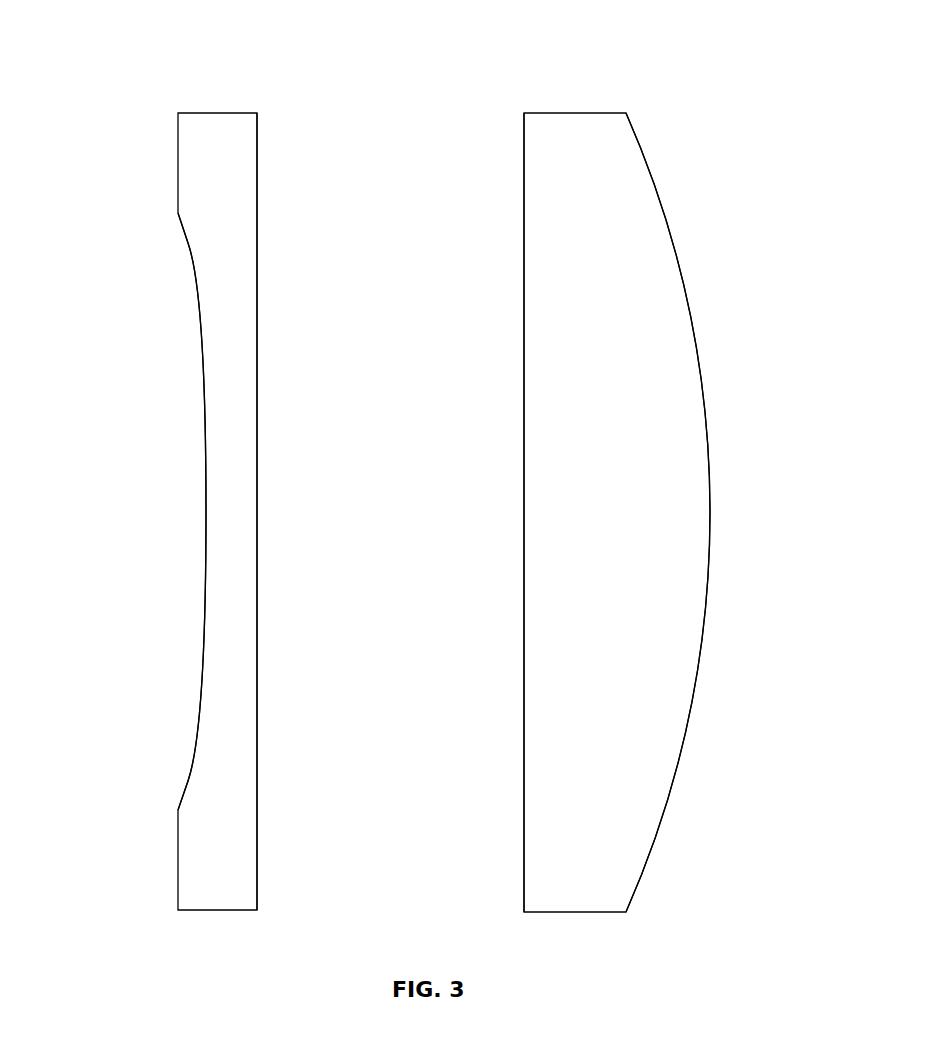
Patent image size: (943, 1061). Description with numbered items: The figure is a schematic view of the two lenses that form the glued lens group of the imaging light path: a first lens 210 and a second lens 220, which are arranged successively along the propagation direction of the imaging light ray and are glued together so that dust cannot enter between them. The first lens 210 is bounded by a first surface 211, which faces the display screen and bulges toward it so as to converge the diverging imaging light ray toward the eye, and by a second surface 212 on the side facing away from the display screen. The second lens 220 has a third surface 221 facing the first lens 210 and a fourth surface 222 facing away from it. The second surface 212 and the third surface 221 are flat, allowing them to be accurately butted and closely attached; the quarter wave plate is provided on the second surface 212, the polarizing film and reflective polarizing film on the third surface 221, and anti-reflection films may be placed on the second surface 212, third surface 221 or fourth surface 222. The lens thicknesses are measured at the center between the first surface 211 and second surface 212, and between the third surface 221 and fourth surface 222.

The first lens 210 is at (567, 113).
The first surface 211 is at (706, 317).
The second surface 212 is at (510, 877).
The second lens 220 is at (210, 113).
The third surface 221 is at (270, 179).
The fourth surface 222 is at (190, 658).